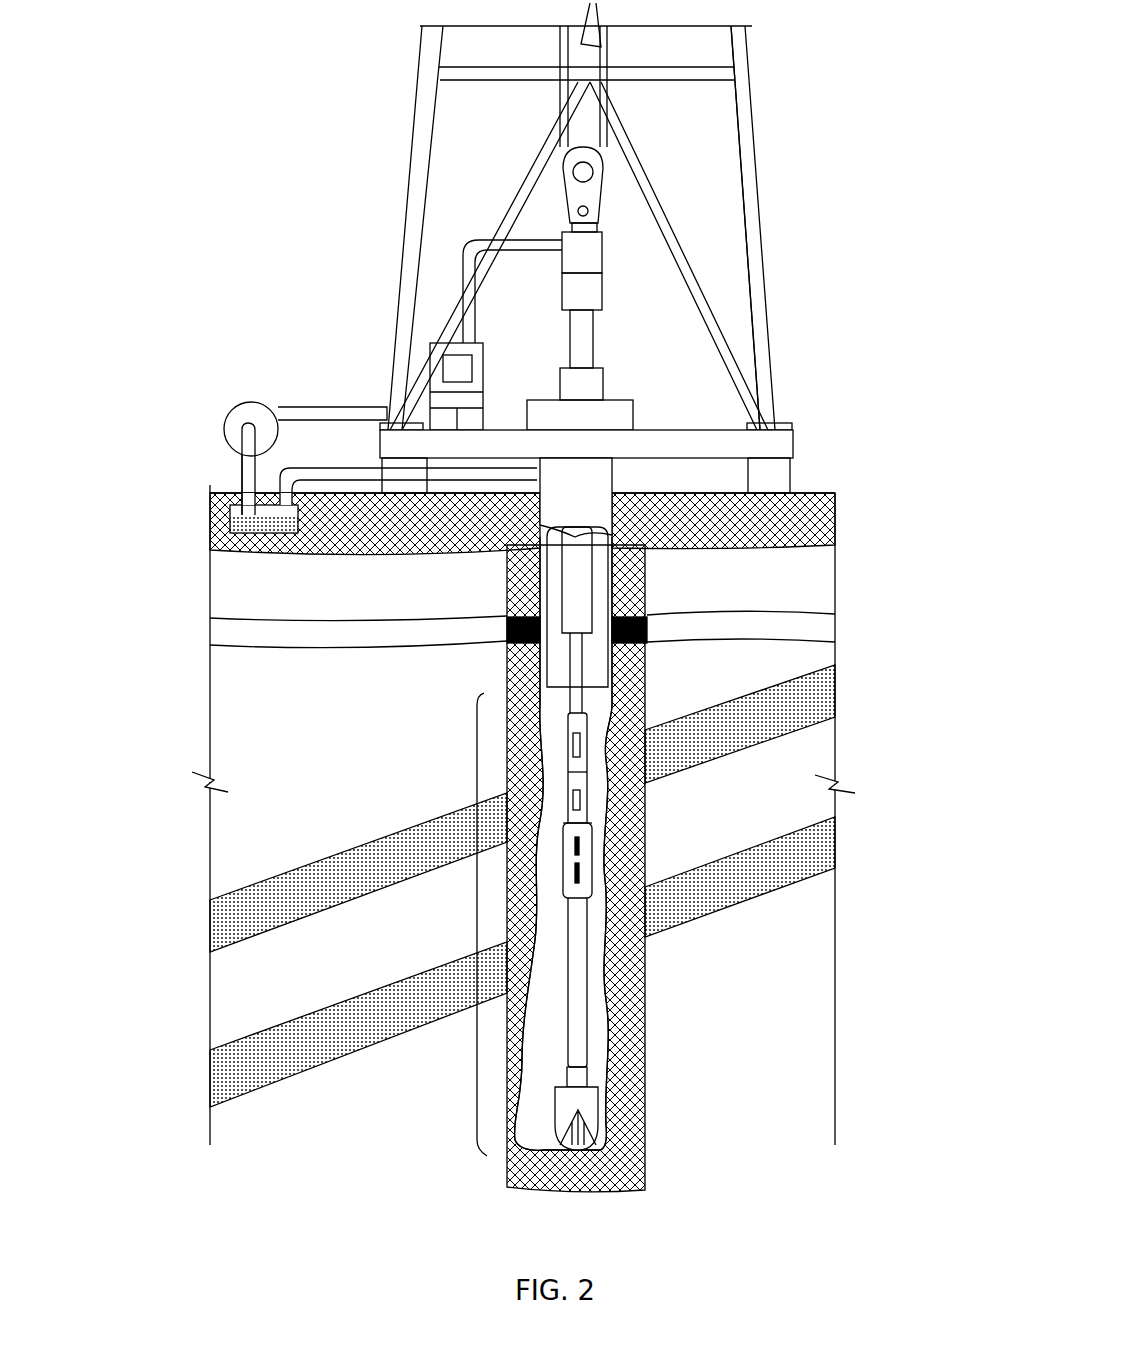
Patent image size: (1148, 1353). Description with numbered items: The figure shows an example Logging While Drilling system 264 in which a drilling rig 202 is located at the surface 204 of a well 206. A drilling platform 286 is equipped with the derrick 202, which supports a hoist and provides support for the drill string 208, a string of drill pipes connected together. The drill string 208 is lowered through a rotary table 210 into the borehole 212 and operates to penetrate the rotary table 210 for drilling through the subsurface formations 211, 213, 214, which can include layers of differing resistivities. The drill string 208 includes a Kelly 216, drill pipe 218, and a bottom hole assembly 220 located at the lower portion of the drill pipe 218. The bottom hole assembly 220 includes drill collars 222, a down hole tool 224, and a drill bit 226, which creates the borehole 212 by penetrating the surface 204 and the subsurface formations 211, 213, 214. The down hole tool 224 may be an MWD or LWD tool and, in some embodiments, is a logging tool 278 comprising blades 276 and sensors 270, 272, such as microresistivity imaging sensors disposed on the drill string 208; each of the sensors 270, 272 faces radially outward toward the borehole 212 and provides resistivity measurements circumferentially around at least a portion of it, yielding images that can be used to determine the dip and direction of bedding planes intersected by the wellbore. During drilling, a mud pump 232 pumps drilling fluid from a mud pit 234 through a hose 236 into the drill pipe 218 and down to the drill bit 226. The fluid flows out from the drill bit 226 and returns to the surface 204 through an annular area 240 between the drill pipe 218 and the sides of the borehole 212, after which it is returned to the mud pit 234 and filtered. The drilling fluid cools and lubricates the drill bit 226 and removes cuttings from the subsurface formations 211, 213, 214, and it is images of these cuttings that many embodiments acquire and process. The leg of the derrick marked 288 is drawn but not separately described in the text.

The drilling rig 202 is at (763, 201).
The surface 204 is at (812, 490).
The well 206 is at (620, 487).
The drilling string 208 is at (645, 930).
The rotary table 210 is at (633, 415).
The subsurface formation 211 is at (318, 878).
The borehole 212 is at (603, 1000).
The subsurface formation 213 is at (332, 1042).
The subsurface formation 214 is at (180, 613).
The Kelly 216 is at (593, 343).
The drill pipe 218 is at (597, 671).
The bottom hole assembly 220 is at (477, 925).
The drill collars 222 is at (580, 603).
The down hole tool 224 is at (587, 1060).
The drill bit 226 is at (583, 1110).
The mud pump 232 is at (262, 405).
The mud pit 234 is at (225, 545).
The hose 236 is at (372, 405).
The annular area 240 is at (587, 763).
The system 264 is at (544, 216).
The sensor 270 is at (577, 875).
The sensor 272 is at (581, 847).
The blades 276 is at (575, 838).
The logging tool 278 is at (567, 826).
The drilling platform 286 is at (793, 438).
The derrick leg 288 is at (750, 101).